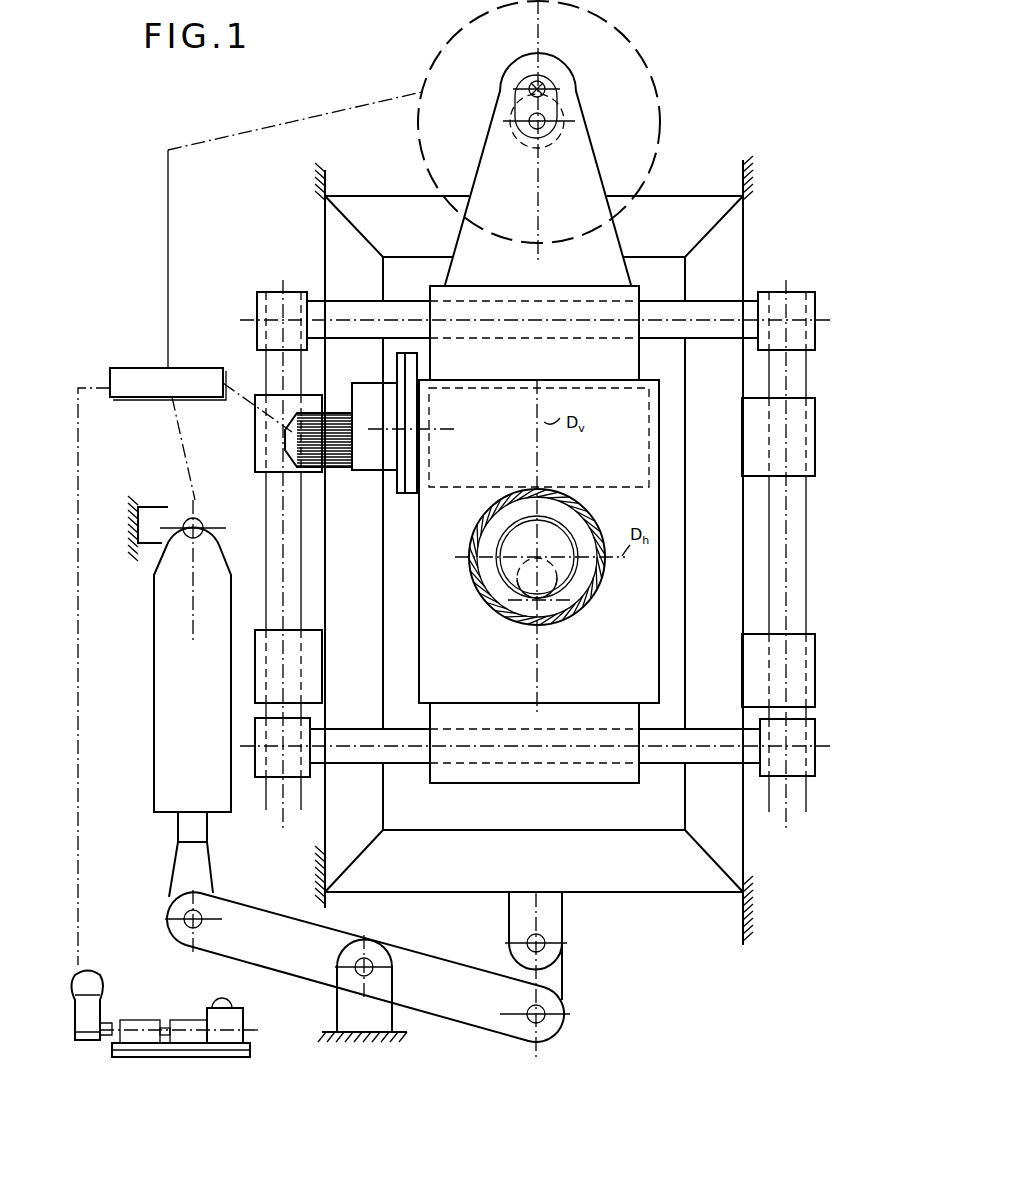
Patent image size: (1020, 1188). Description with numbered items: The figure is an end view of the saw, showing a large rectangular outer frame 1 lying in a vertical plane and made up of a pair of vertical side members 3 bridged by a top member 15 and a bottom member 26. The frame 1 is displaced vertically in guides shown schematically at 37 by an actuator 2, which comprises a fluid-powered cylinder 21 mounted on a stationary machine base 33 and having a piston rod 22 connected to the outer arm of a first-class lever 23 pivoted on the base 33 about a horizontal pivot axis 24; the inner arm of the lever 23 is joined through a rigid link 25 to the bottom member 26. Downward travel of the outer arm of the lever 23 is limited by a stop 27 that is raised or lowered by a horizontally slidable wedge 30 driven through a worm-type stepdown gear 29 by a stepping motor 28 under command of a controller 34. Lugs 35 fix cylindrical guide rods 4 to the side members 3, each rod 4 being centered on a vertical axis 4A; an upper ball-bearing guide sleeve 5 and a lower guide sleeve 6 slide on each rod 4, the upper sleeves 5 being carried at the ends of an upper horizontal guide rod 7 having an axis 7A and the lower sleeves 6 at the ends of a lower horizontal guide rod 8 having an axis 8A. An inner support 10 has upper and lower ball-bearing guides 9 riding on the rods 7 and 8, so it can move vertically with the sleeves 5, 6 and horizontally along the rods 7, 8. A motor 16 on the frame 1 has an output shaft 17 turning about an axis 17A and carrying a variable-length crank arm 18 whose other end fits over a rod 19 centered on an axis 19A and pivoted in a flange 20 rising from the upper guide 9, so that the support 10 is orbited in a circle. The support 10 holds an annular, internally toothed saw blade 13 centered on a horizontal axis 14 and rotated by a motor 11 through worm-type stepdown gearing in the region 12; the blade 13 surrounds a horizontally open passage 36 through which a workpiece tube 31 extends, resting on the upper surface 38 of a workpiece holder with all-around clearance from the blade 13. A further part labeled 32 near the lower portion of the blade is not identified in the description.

The outer frame 1 is at (750, 210).
The actuator 2 is at (170, 832).
The vertical side members 3 is at (332, 232).
The cylindrical guide rods 4 is at (270, 536).
The vertical axes 4A is at (284, 298).
The upper ball-bearing guide sleeves 5 is at (257, 306).
The lower guide sleeves 6 is at (258, 766).
The upper horizontal guide rod 7 is at (404, 306).
The axis of upper guide rod 7A is at (728, 326).
The lower horizontal guide rod 8 is at (663, 760).
The axis of lower guide rod 8A is at (722, 745).
The ball-bearing guides 9 is at (633, 296).
The inner support 10 is at (412, 548).
The motor 11 is at (292, 444).
The worm-type stepdown gearing region 12 is at (640, 400).
The saw blade 13 is at (598, 532).
The horizontal axis 14 is at (537, 557).
The top member 15 is at (384, 210).
The motor 16 is at (640, 44).
The output shaft 17 is at (543, 130).
The shaft axis 17A is at (532, 133).
The variable-length crank arm 18 is at (514, 106).
The rod 19 is at (533, 82).
The rod axis 19A is at (542, 84).
The flange 20 is at (588, 192).
The fluid-powered cylinder 21 is at (154, 635).
The piston rod 22 is at (183, 840).
The lever 23 is at (448, 1035).
The horizontal pivot axis 24 is at (366, 965).
The support link 25 is at (506, 972).
The bottom member 26 is at (678, 880).
The stop 27 is at (230, 1008).
The stepping motor 28 is at (100, 980).
The worm-type stepdown gear 29 is at (86, 1040).
The slidable wedge 30 is at (182, 1048).
The tube 31 is at (576, 576).
The lower line 32 is at (510, 600).
The machine base 33 is at (155, 520).
The controller 34 is at (150, 366).
The lugs 35 is at (320, 662).
The passage 36 is at (550, 498).
The guides 37 is at (327, 180).
The upper surface 38 is at (556, 604).